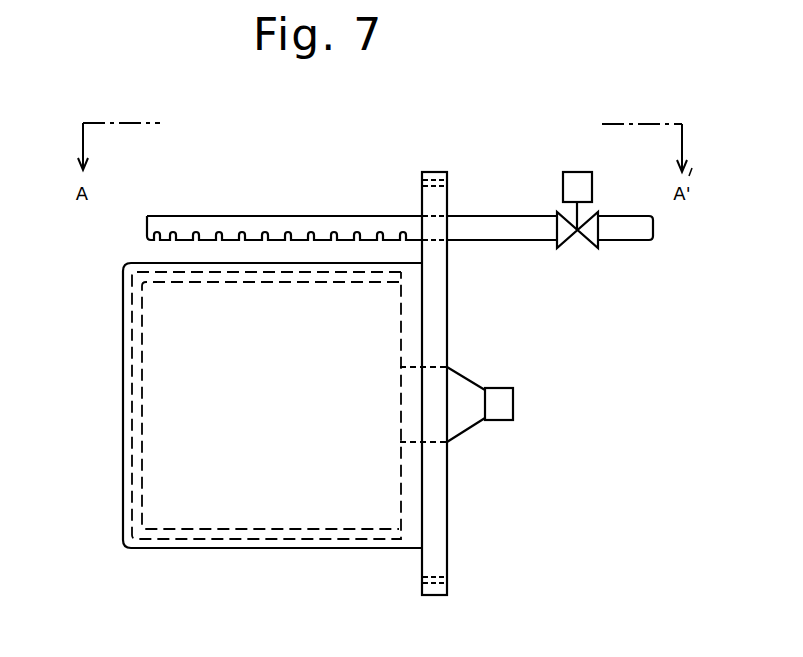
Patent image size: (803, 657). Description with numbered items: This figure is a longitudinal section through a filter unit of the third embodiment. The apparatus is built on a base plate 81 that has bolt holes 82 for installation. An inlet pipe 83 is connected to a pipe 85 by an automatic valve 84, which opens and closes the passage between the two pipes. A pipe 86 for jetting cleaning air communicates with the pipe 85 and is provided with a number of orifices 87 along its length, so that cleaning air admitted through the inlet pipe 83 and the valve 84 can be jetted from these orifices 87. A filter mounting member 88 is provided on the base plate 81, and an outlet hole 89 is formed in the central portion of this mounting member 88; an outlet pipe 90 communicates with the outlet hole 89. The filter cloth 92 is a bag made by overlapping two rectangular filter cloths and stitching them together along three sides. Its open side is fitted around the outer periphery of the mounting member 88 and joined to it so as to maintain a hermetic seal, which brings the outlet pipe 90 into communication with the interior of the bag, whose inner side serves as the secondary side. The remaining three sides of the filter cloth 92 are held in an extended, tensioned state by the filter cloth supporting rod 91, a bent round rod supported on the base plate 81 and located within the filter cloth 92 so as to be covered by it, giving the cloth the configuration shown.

The base plate 81 is at (448, 557).
The bolt holes 82 is at (448, 185).
The inlet pipe 83 is at (630, 242).
The automatic valve 84 is at (571, 242).
The pipe 85 is at (517, 242).
The pipe for jetting cleaning air 86 is at (253, 210).
The orifices 87 is at (150, 240).
The filter mounting member 88 is at (398, 340).
The outlet hole 89 is at (398, 405).
The outlet pipe 90 is at (498, 421).
The filter cloth supporting rod 91 is at (125, 335).
The filter cloth 92 is at (153, 518).